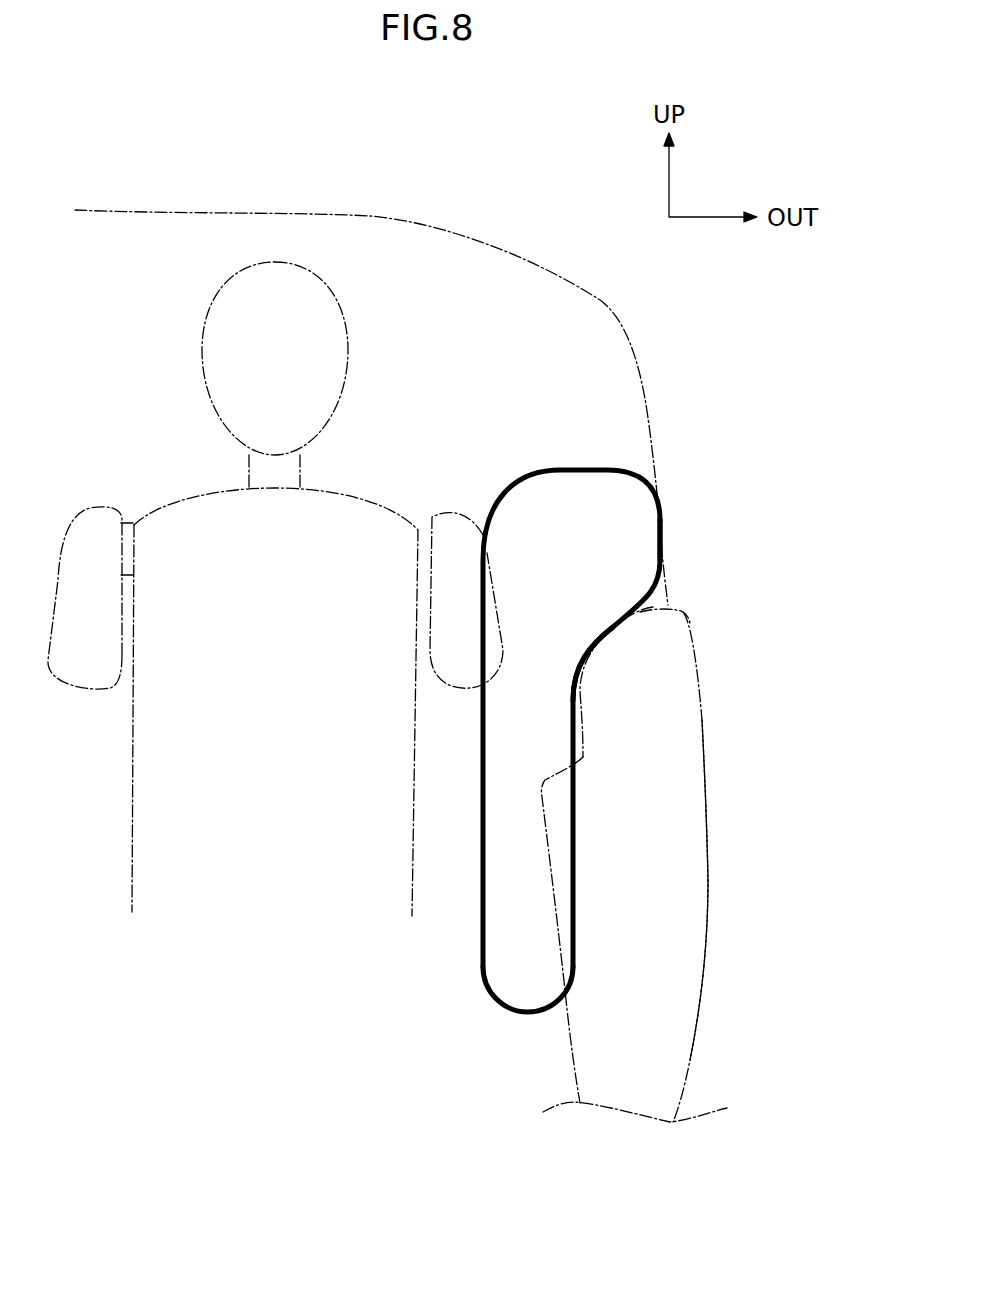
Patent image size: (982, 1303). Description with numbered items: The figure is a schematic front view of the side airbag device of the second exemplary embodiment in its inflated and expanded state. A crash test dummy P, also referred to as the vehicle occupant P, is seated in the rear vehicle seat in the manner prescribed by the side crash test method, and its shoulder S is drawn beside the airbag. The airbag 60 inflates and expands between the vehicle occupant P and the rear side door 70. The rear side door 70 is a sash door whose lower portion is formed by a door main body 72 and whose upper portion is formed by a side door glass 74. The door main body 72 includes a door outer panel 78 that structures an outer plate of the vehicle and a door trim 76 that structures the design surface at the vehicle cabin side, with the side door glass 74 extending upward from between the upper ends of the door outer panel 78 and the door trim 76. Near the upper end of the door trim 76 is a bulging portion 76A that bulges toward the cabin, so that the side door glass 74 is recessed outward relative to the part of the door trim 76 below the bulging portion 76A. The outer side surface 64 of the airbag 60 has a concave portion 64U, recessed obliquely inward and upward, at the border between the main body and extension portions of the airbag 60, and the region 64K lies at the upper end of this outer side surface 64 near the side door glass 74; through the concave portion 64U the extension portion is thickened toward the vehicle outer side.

The crash test dummy P is at (204, 353).
The shoulder of occupant S is at (462, 527).
The side door glass 74 is at (649, 418).
The airbag 60 is at (485, 957).
The outer side surface 64 is at (575, 830).
The upper end portion of rear chamber 64K is at (664, 542).
The concave portion 64U is at (584, 653).
The rear side door 70 is at (645, 846).
The bulging portion 76A is at (655, 602).
The door trim 76 is at (570, 1045).
The door outer panel 78 is at (706, 803).
The door main body 72 is at (710, 870).